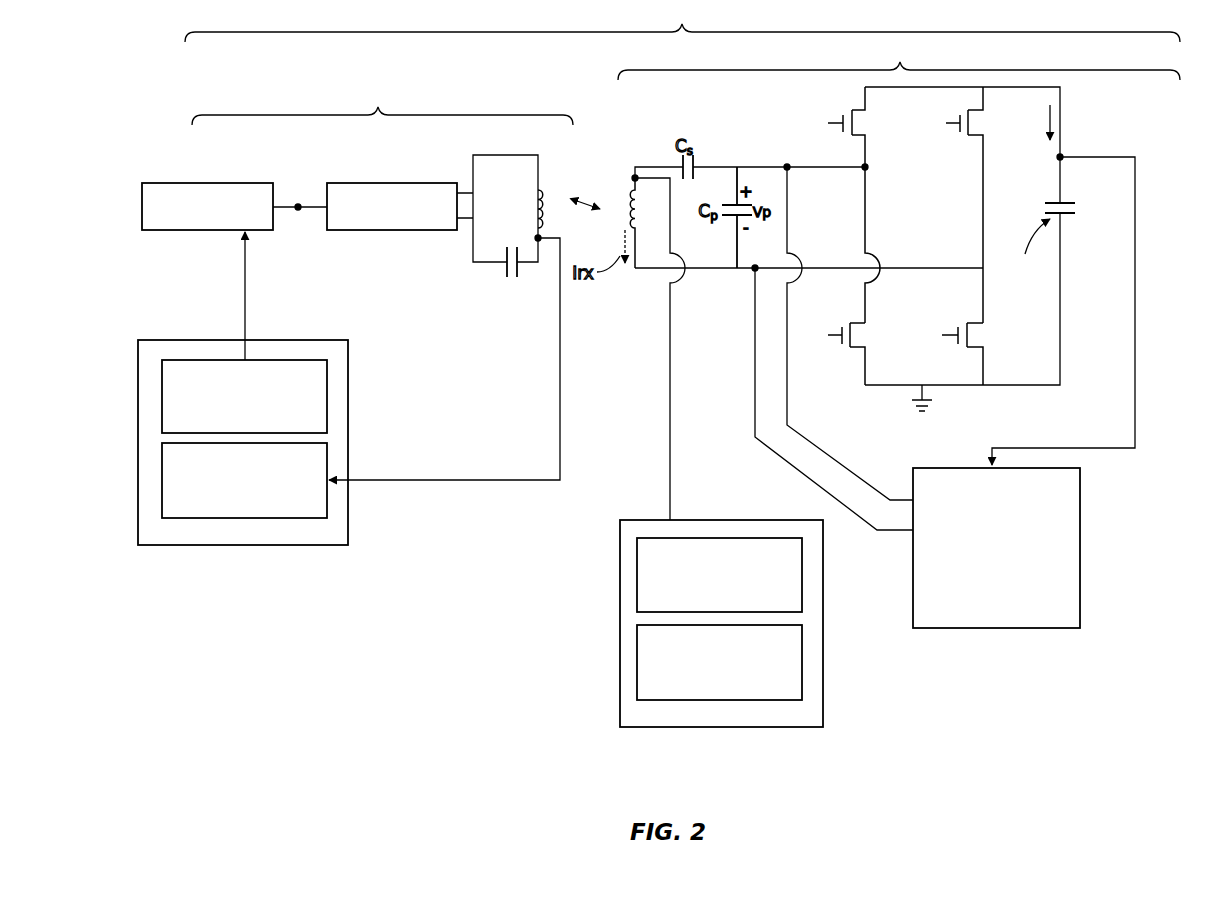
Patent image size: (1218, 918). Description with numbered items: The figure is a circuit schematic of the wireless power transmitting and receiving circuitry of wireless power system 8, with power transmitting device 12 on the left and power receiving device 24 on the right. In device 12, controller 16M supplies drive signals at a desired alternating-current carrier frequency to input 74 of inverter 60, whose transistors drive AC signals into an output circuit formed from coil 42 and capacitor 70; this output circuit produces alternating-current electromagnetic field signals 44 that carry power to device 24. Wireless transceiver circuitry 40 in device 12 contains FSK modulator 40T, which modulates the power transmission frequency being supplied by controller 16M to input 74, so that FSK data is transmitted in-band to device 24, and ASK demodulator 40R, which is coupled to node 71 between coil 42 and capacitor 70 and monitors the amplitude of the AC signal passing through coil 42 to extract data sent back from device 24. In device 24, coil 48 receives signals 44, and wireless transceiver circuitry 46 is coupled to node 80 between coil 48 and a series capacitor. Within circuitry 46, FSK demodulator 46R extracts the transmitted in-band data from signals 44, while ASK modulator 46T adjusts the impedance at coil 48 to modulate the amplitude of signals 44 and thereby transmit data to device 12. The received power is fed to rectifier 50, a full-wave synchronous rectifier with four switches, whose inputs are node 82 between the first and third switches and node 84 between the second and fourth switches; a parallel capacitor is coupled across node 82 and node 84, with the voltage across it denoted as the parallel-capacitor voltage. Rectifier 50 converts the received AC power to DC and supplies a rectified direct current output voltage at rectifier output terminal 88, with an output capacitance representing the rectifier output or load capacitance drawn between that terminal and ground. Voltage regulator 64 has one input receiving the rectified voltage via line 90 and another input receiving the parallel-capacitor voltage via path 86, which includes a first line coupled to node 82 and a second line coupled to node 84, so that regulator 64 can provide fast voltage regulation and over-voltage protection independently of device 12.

The wireless power system 8 is at (682, 21).
The power transmitting device 12 is at (382, 102).
The power receiving device 24 is at (899, 61).
The controller 16M is at (157, 182).
The input of inverter 74 is at (299, 204).
The inverter 60 is at (393, 183).
The coil 42 is at (533, 194).
The node 71 is at (533, 236).
The capacitor 70 is at (497, 272).
The signals 44 is at (578, 196).
The wireless transceiver circuitry 40 is at (243, 418).
The FSK modulator 40T is at (310, 358).
The ASK demodulator 40R is at (213, 520).
The node 80 is at (630, 176).
The coil 48 is at (642, 219).
The node 82 is at (791, 172).
The node 84 is at (752, 275).
The path 86 is at (787, 386).
The rectifier 50 is at (842, 410).
The rectifier output terminal 88 is at (1067, 150).
The line 90 is at (1135, 283).
The voltage regulator 64 is at (990, 630).
The wireless transceiver circuitry 46 is at (750, 651).
The ASK modulator 46T is at (802, 582).
The FSK demodulator 46R is at (802, 660).